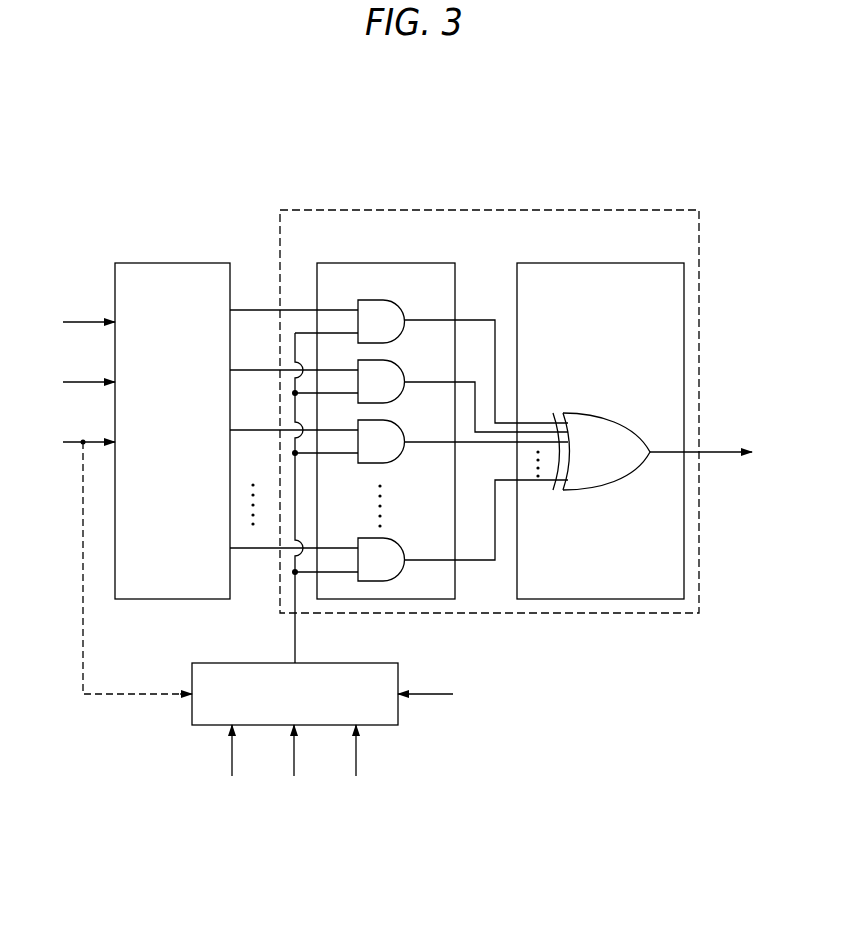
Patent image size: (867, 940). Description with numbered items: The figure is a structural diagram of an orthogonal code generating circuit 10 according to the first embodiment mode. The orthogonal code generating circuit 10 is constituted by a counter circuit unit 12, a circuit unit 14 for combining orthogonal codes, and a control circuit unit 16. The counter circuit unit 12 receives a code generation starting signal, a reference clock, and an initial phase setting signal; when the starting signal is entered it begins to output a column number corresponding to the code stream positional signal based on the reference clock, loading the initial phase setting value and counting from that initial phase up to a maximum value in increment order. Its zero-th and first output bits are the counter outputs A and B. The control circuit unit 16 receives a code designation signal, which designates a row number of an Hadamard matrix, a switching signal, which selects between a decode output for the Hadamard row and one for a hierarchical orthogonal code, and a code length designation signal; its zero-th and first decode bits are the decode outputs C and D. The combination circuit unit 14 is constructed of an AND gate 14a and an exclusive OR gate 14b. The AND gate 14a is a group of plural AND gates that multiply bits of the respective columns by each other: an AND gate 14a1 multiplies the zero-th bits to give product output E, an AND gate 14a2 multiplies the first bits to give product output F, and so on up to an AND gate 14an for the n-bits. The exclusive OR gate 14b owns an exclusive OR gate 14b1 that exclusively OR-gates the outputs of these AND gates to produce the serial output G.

The orthogonal code generating circuit 10 is at (547, 146).
The counter circuit unit 12 is at (175, 263).
The circuit unit for combining orthogonal codes 14 is at (486, 209).
The AND gate 14a is at (370, 263).
The AND gate 14a1 is at (402, 310).
The AND gate 14a2 is at (402, 372).
The AND gate 14an is at (402, 550).
The exclusive OR gate 14b is at (593, 263).
The exclusive OR gate 14b1 is at (592, 413).
The control circuit unit 16 is at (350, 663).